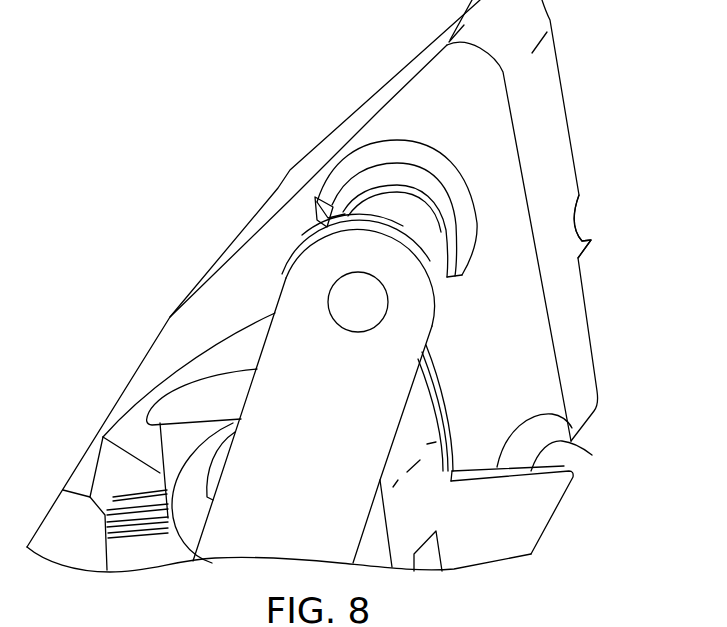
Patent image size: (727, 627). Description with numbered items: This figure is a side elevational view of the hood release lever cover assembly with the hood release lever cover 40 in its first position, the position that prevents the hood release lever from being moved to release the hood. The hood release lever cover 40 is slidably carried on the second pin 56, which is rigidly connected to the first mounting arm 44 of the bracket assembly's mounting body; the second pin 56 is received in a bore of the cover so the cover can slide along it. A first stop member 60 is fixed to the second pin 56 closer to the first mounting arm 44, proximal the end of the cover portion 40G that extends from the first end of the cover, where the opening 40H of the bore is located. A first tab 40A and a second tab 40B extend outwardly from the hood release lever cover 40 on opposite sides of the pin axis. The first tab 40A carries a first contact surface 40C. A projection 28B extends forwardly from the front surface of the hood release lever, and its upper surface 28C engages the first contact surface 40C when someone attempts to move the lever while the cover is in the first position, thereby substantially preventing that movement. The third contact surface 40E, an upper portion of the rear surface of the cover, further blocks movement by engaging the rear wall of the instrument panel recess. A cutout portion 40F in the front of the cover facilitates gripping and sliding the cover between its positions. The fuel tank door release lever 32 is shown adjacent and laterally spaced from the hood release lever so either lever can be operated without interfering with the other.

The hood release lever cover 40 is at (562, 72).
The first tab 40A is at (574, 356).
The second tab 40B is at (127, 418).
The first contact surface 40C is at (571, 421).
The third contact surface 40E is at (395, 83).
The cutout portion 40F is at (575, 230).
The cover portion 40G is at (442, 172).
The opening 40H is at (317, 220).
The first mounting arm 44 is at (257, 510).
The second pin 56 is at (392, 225).
The first stop member 60 is at (422, 237).
The fuel tank door release lever 32 is at (183, 402).
The projection 28B is at (561, 511).
The upper surface 28C is at (577, 444).